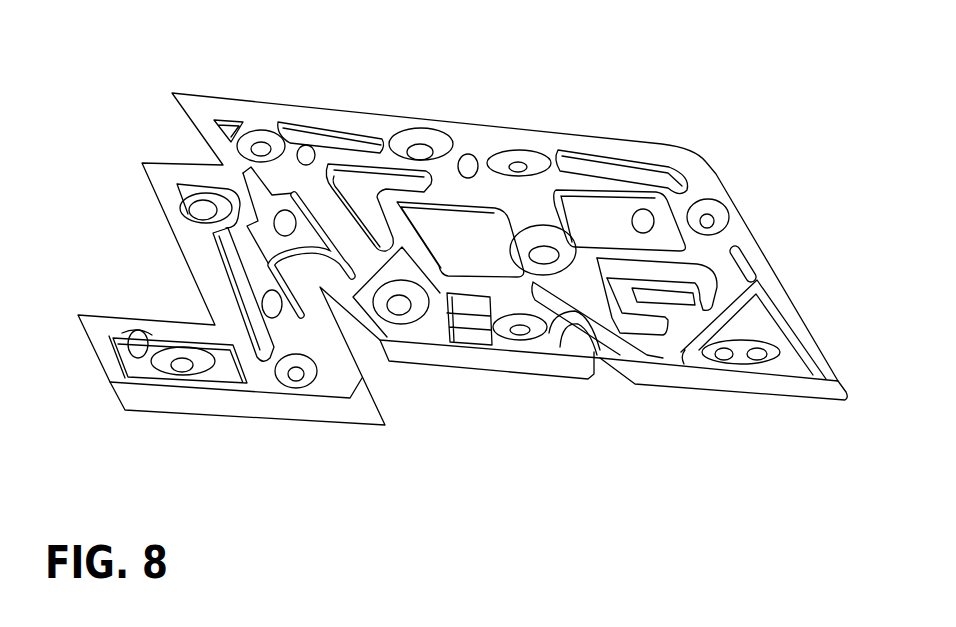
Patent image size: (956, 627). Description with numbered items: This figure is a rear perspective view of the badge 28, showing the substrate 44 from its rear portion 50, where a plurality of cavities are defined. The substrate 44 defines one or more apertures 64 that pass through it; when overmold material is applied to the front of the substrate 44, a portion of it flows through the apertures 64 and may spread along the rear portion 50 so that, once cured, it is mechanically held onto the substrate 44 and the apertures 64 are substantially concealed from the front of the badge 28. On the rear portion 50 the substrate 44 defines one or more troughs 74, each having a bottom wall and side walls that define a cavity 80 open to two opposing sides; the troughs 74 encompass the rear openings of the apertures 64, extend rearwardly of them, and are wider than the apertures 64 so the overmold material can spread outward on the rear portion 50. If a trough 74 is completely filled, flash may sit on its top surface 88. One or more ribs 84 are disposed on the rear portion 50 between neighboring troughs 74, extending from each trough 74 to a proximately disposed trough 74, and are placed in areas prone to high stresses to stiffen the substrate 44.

The badge 28 is at (419, 104).
The substrate 44 is at (300, 410).
The rear portion 50 is at (502, 197).
The apertures 64 is at (263, 147).
The troughs 74 is at (547, 240).
The cavity 80 is at (406, 300).
The ribs 84 is at (668, 180).
The top surface 88 is at (377, 103).